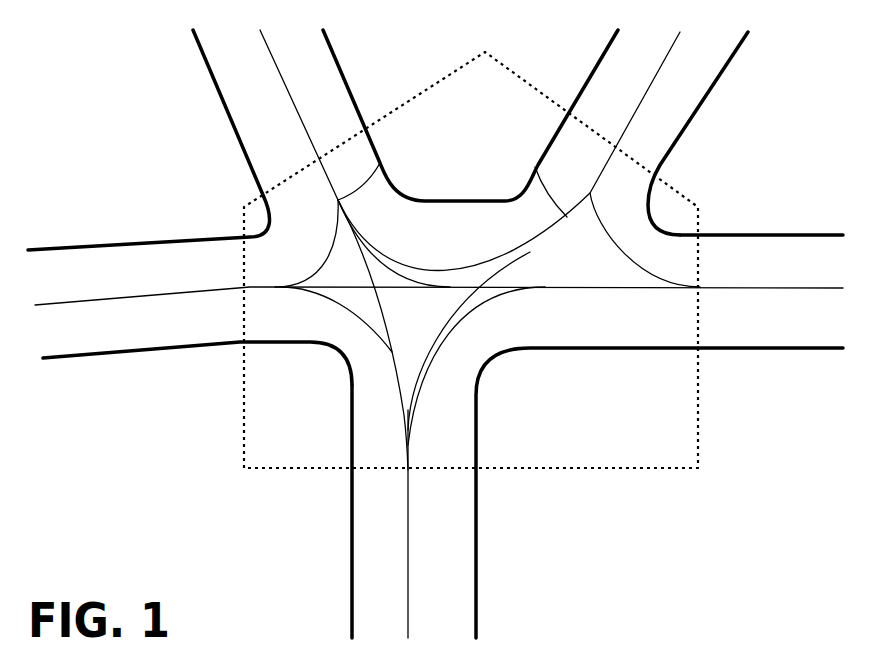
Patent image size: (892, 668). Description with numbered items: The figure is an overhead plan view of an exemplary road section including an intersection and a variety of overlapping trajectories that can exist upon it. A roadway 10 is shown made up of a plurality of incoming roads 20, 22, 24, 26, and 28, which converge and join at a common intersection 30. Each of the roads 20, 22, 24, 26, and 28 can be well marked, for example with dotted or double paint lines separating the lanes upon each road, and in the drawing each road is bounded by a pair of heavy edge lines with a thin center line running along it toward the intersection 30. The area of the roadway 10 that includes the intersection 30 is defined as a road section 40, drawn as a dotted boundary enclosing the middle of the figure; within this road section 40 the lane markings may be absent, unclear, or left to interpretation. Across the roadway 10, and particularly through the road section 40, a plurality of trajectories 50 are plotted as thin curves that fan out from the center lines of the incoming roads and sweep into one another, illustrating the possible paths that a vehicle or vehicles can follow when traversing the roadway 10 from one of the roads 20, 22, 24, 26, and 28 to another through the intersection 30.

The roadway 10 is at (737, 332).
The incoming road 20 is at (763, 263).
The incoming road 22 is at (683, 88).
The incoming road 24 is at (252, 97).
The incoming road 26 is at (138, 327).
The incoming road 28 is at (363, 565).
The intersection 30 is at (415, 322).
The road section 40 is at (288, 473).
The trajectories 50 is at (377, 163).